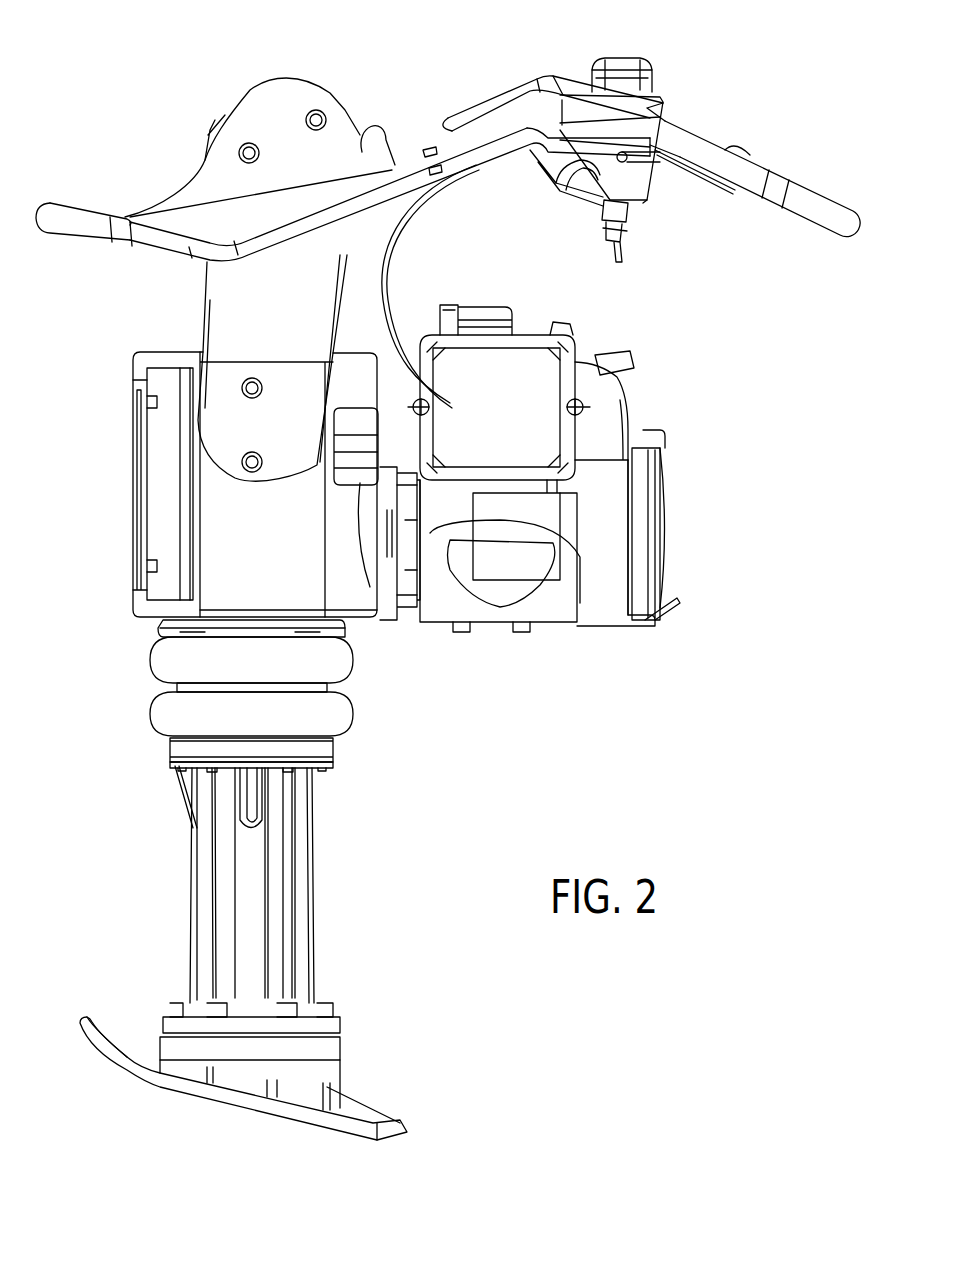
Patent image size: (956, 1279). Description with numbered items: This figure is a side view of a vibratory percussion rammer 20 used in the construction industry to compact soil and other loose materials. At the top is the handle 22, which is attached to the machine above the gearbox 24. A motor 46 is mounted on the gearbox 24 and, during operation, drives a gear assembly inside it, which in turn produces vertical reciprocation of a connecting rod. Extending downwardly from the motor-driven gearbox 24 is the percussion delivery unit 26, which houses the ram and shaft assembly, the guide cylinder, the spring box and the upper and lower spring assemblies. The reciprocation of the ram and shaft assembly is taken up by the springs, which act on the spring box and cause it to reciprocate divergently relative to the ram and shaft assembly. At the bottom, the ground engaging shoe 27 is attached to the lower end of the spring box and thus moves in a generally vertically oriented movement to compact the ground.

The vibratory percussion rammer 20 is at (412, 80).
The handle 22 is at (801, 197).
The gearbox 24 is at (130, 547).
The percussion delivery unit 26 is at (319, 907).
The ground engaging shoe 27 is at (390, 1130).
The motor 46 is at (673, 388).